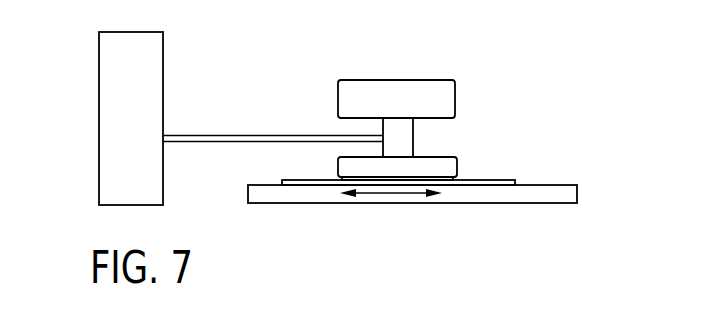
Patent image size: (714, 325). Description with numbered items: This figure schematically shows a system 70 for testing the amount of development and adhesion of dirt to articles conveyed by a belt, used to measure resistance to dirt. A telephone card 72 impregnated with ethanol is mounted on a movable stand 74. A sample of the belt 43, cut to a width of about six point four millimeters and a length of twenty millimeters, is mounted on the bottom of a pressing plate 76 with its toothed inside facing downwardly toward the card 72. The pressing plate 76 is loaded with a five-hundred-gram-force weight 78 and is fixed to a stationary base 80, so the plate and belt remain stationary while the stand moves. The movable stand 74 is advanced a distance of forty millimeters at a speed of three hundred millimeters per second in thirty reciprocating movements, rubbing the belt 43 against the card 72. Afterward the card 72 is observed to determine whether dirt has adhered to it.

The system 70 is at (527, 147).
The telephone card 72 is at (515, 182).
The movable stand 74 is at (547, 197).
The pressing plate 76 is at (355, 165).
The weight 78 is at (378, 90).
The belt 43 is at (408, 175).
The stationary base 80 is at (110, 162).